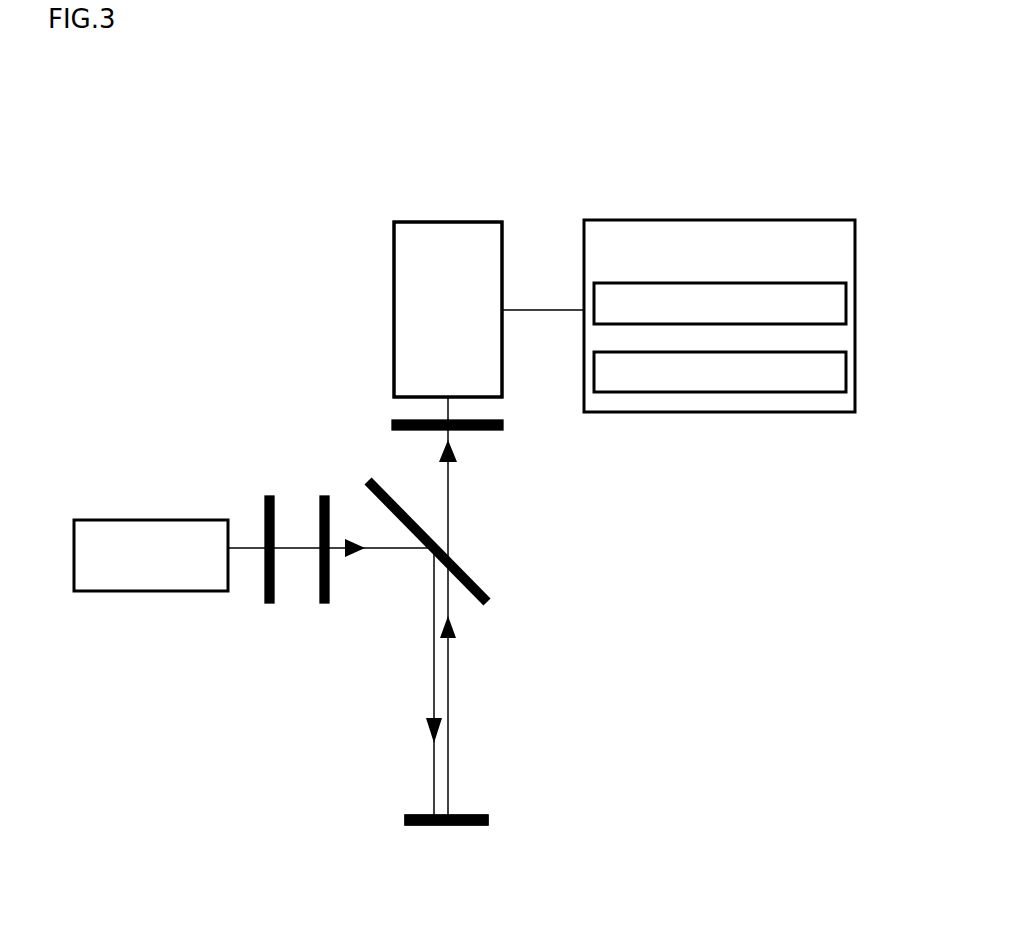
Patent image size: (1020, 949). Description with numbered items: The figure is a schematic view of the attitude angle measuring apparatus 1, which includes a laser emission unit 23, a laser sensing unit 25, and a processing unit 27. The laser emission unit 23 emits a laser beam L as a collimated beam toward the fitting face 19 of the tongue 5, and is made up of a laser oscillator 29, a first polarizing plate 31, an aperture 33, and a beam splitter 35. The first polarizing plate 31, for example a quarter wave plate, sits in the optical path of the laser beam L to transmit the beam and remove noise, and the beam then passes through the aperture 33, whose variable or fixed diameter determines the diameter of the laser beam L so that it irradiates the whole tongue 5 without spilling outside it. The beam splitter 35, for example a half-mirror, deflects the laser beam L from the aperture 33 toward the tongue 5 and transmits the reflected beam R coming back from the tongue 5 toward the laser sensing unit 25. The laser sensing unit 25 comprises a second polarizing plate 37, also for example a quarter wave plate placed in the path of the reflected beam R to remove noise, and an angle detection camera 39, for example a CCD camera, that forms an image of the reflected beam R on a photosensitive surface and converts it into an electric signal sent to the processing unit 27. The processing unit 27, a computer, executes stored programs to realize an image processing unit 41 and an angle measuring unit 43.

The attitude angle measuring apparatus 1 is at (222, 190).
The tongue 5 is at (470, 825).
The fitting face 19 is at (480, 812).
The laser emission unit 23 is at (310, 645).
The laser sensing unit 25 is at (375, 358).
The processing unit 27 is at (653, 218).
The laser oscillator 29 is at (108, 533).
The first polarizing plate 31 is at (268, 495).
The aperture 33 is at (323, 495).
The beam splitter 35 is at (475, 582).
The second polarizing plate 37 is at (480, 430).
The angle detection camera 39 is at (452, 240).
The image processing unit 41 is at (765, 283).
The angle measuring unit 43 is at (755, 392).
The laser beam L is at (434, 668).
The reflected beam R is at (448, 708).